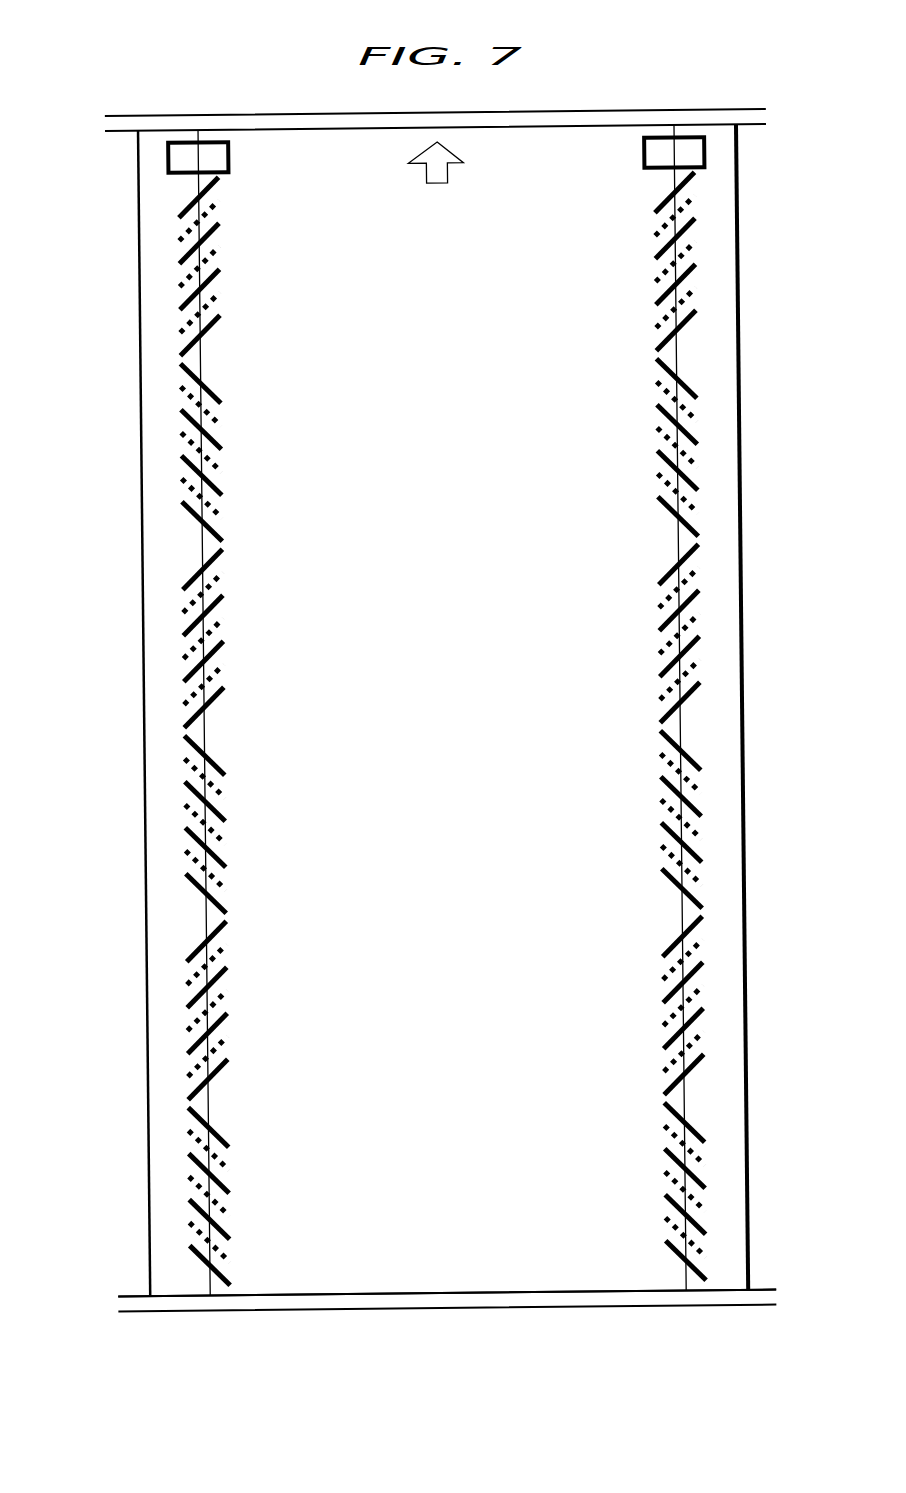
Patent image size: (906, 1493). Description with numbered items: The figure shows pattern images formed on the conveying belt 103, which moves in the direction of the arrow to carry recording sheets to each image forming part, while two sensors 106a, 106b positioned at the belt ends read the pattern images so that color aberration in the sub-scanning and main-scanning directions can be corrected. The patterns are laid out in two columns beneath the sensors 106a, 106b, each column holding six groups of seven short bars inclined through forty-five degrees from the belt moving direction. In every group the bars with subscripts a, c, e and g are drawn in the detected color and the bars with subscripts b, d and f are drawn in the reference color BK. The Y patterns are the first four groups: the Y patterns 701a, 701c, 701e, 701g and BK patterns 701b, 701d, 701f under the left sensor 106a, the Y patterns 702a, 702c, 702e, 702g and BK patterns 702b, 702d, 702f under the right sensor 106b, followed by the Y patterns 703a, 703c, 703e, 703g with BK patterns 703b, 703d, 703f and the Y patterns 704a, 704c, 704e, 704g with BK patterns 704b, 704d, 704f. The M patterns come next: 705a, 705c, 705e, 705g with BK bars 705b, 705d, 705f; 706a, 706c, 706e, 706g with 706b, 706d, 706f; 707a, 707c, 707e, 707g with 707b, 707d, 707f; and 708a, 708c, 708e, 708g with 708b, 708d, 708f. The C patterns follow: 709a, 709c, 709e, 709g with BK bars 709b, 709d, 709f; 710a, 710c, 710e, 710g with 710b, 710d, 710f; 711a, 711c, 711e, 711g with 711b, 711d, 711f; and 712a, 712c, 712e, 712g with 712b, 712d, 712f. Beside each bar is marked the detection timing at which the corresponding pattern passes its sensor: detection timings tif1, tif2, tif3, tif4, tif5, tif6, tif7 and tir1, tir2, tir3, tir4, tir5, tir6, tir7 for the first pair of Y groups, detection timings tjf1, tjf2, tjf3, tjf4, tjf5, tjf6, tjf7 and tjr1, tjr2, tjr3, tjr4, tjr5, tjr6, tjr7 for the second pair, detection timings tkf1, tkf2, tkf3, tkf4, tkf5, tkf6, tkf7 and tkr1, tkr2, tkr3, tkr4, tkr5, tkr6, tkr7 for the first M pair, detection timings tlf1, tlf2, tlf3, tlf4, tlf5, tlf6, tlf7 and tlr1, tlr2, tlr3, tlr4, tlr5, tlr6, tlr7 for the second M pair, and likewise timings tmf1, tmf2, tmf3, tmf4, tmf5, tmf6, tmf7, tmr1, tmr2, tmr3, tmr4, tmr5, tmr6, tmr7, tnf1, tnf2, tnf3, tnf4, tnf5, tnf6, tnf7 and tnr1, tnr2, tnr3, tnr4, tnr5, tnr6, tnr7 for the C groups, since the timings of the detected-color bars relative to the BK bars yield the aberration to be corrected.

The conveying belt 103 is at (421, 1272).
The sensor 106a is at (174, 155).
The sensor 106b is at (710, 155).
The Y pattern image 701a is at (176, 197).
The BK pattern image 701b is at (194, 220).
The Y pattern image 701c is at (176, 243).
The BK pattern image 701d is at (194, 266).
The Y pattern image 701e is at (176, 289).
The BK pattern image 701f is at (195, 312).
The Y pattern image 701g is at (177, 335).
The Y pattern image 702a is at (694, 192).
The BK pattern image 702b is at (672, 215).
The Y pattern image 702c is at (695, 238).
The BK pattern image 702d is at (672, 261).
The Y pattern image 702e is at (695, 284).
The BK pattern image 702f is at (674, 307).
The Y pattern image 702g is at (696, 330).
The Y pattern image 703a is at (177, 383).
The BK pattern image 703b is at (196, 406).
The Y pattern image 703c is at (178, 429).
The BK pattern image 703d is at (196, 452).
The Y pattern image 703e is at (178, 475).
The BK pattern image 703f is at (197, 498).
The Y pattern image 703g is at (179, 521).
The Y pattern image 704a is at (696, 378).
The BK pattern image 704b is at (674, 401).
The Y pattern image 704c is at (697, 424).
The BK pattern image 704d is at (674, 447).
The Y pattern image 704e is at (697, 470).
The BK pattern image 704f is at (676, 493).
The Y pattern image 704g is at (698, 516).
The M pattern image 705a is at (182, 569).
The BK pattern image 705b is at (201, 592).
The M pattern image 705c is at (183, 615).
The BK pattern image 705d is at (201, 638).
The M pattern image 705e is at (183, 661).
The BK pattern image 705f is at (202, 684).
The M pattern image 705g is at (184, 707).
The M pattern image 706a is at (695, 564).
The BK pattern image 706b is at (673, 587).
The M pattern image 706c is at (696, 610).
The BK pattern image 706d is at (673, 633).
The M pattern image 706e is at (696, 656).
The BK pattern image 706f is at (675, 679).
The M pattern image 706g is at (697, 702).
The M pattern image 707a is at (181, 755).
The BK pattern image 707b is at (200, 778).
The M pattern image 707c is at (182, 801).
The BK pattern image 707d is at (200, 824).
The M pattern image 707e is at (182, 847).
The BK pattern image 707f is at (201, 870).
The M pattern image 707g is at (183, 893).
The M pattern image 708a is at (700, 750).
The BK pattern image 708b is at (678, 773).
The M pattern image 708c is at (701, 796).
The BK pattern image 708d is at (678, 819).
The M pattern image 708e is at (701, 842).
The BK pattern image 708f is at (680, 865).
The M pattern image 708g is at (702, 888).
The C pattern image 709a is at (190, 941).
The BK pattern image 709b is at (208, 964).
The C pattern image 709c is at (191, 987).
The BK pattern image 709d is at (208, 1010).
The C pattern image 709e is at (191, 1033).
The BK pattern image 709f is at (209, 1056).
The C pattern image 709g is at (192, 1079).
The C pattern image 710a is at (695, 936).
The BK pattern image 710b is at (674, 959).
The C pattern image 710c is at (696, 982).
The BK pattern image 710d is at (674, 1005).
The C pattern image 710e is at (696, 1028).
The BK pattern image 710f is at (674, 1051).
The C pattern image 710g is at (697, 1074).
The C pattern image 711a is at (189, 1127).
The BK pattern image 711b is at (207, 1150).
The C pattern image 711c is at (190, 1173).
The BK pattern image 711d is at (207, 1196).
The C pattern image 711e is at (190, 1219).
The BK pattern image 711f is at (207, 1242).
The C pattern image 711g is at (191, 1265).
The C pattern image 712a is at (700, 1122).
The BK pattern image 712b is at (678, 1145).
The C pattern image 712c is at (701, 1168).
The BK pattern image 712d is at (679, 1191).
The C pattern image 712e is at (701, 1214).
The BK pattern image 712f is at (679, 1237).
The C pattern image 712g is at (702, 1260).
The detection timing tif1 is at (239, 196).
The detection timing tif2 is at (256, 220).
The detection timing tif3 is at (239, 242).
The detection timing tif4 is at (256, 266).
The detection timing tif5 is at (239, 288).
The detection timing tif6 is at (257, 312).
The detection timing tif7 is at (240, 334).
The detection timing tir1 is at (631, 192).
The detection timing tir2 is at (610, 216).
The detection timing tir3 is at (632, 238).
The detection timing tir4 is at (610, 262).
The detection timing tir5 is at (632, 284).
The detection timing tir6 is at (611, 308).
The detection timing tir7 is at (633, 330).
The detection timing tjf1 is at (240, 382).
The detection timing tjf2 is at (258, 406).
The detection timing tjf3 is at (241, 428).
The detection timing tjf4 is at (258, 452).
The detection timing tjf5 is at (241, 474).
The detection timing tjf6 is at (259, 498).
The detection timing tjf7 is at (242, 520).
The detection timing tjr1 is at (633, 378).
The detection timing tjr2 is at (612, 402).
The detection timing tjr3 is at (634, 424).
The detection timing tjr4 is at (612, 448).
The detection timing tjr5 is at (634, 470).
The detection timing tjr6 is at (613, 494).
The detection timing tjr7 is at (635, 516).
The detection timing tkf1 is at (245, 568).
The detection timing tkf2 is at (263, 592).
The detection timing tkf3 is at (246, 614).
The detection timing tkf4 is at (263, 638).
The detection timing tkf5 is at (246, 660).
The detection timing tkf6 is at (264, 684).
The detection timing tkf7 is at (247, 706).
The detection timing tkr1 is at (632, 564).
The detection timing tkr2 is at (611, 588).
The detection timing tkr3 is at (633, 610).
The detection timing tkr4 is at (611, 634).
The detection timing tkr5 is at (633, 656).
The detection timing tkr6 is at (612, 680).
The detection timing tkr7 is at (634, 702).
The detection timing tlf1 is at (244, 754).
The detection timing tlf2 is at (262, 778).
The detection timing tlf3 is at (245, 800).
The detection timing tlf4 is at (262, 824).
The detection timing tlf5 is at (245, 846).
The detection timing tlf6 is at (263, 870).
The detection timing tlf7 is at (246, 892).
The detection timing tlr1 is at (637, 750).
The detection timing tlr2 is at (616, 774).
The detection timing tlr3 is at (638, 796).
The detection timing tlr4 is at (616, 820).
The detection timing tlr5 is at (638, 842).
The detection timing tlr6 is at (617, 866).
The detection timing tlr7 is at (639, 888).
The detection timing tmf1 is at (252, 940).
The detection timing tmf2 is at (271, 964).
The detection timing tmf3 is at (253, 986).
The detection timing tmf4 is at (271, 1010).
The detection timing tmf5 is at (253, 1032).
The detection timing tmf6 is at (272, 1056).
The detection timing tmf7 is at (254, 1078).
The detection timing tmr1 is at (633, 936).
The detection timing tmr2 is at (611, 960).
The detection timing tmr3 is at (634, 982).
The detection timing tmr4 is at (611, 1006).
The detection timing tmr5 is at (634, 1028).
The detection timing tmr6 is at (611, 1052).
The detection timing tmr7 is at (635, 1074).
The detection timing tnf1 is at (251, 1126).
The detection timing tnf2 is at (269, 1150).
The detection timing tnf3 is at (252, 1172).
The detection timing tnf4 is at (270, 1196).
The detection timing tnf5 is at (252, 1218).
The detection timing tnf6 is at (270, 1242).
The detection timing tnf7 is at (253, 1264).
The detection timing tnr1 is at (638, 1122).
The detection timing tnr2 is at (615, 1146).
The detection timing tnr3 is at (639, 1168).
The detection timing tnr4 is at (616, 1192).
The detection timing tnr5 is at (639, 1214).
The detection timing tnr6 is at (616, 1238).
The detection timing tnr7 is at (640, 1260).